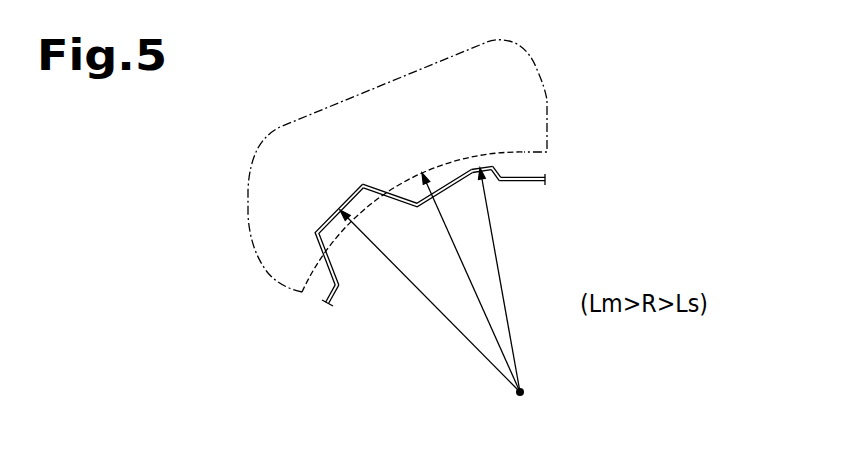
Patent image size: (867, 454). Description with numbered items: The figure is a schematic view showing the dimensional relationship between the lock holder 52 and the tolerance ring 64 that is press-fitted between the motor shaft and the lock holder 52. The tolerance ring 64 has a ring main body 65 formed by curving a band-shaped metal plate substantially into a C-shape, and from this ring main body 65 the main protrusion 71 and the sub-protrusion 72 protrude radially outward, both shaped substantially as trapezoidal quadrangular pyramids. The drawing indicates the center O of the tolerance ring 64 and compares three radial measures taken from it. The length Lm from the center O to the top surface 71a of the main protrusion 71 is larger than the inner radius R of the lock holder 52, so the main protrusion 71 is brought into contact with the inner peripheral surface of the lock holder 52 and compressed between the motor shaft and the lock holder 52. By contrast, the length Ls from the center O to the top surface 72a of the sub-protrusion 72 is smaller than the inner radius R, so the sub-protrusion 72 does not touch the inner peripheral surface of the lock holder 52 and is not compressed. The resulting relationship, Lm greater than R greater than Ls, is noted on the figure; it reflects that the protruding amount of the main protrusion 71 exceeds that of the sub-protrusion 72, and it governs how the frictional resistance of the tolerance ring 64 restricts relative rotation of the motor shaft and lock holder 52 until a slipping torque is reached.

The lock holder 52 is at (547, 97).
The tolerance ring 64 is at (548, 173).
The ring main body 65 is at (330, 303).
The main protrusion 71 is at (378, 188).
The top surface of the main protrusion 71a is at (337, 216).
The sub-protrusion 72 is at (497, 166).
The top surface of the sub-protrusion 72a is at (472, 164).
The center of the tolerance ring O is at (527, 392).
The length from the center to the top surface of the main protrusion Lm is at (386, 257).
The inner radius of the lock holder R is at (457, 248).
The length from the center to the top surface of the sub-protrusion Ls is at (495, 247).